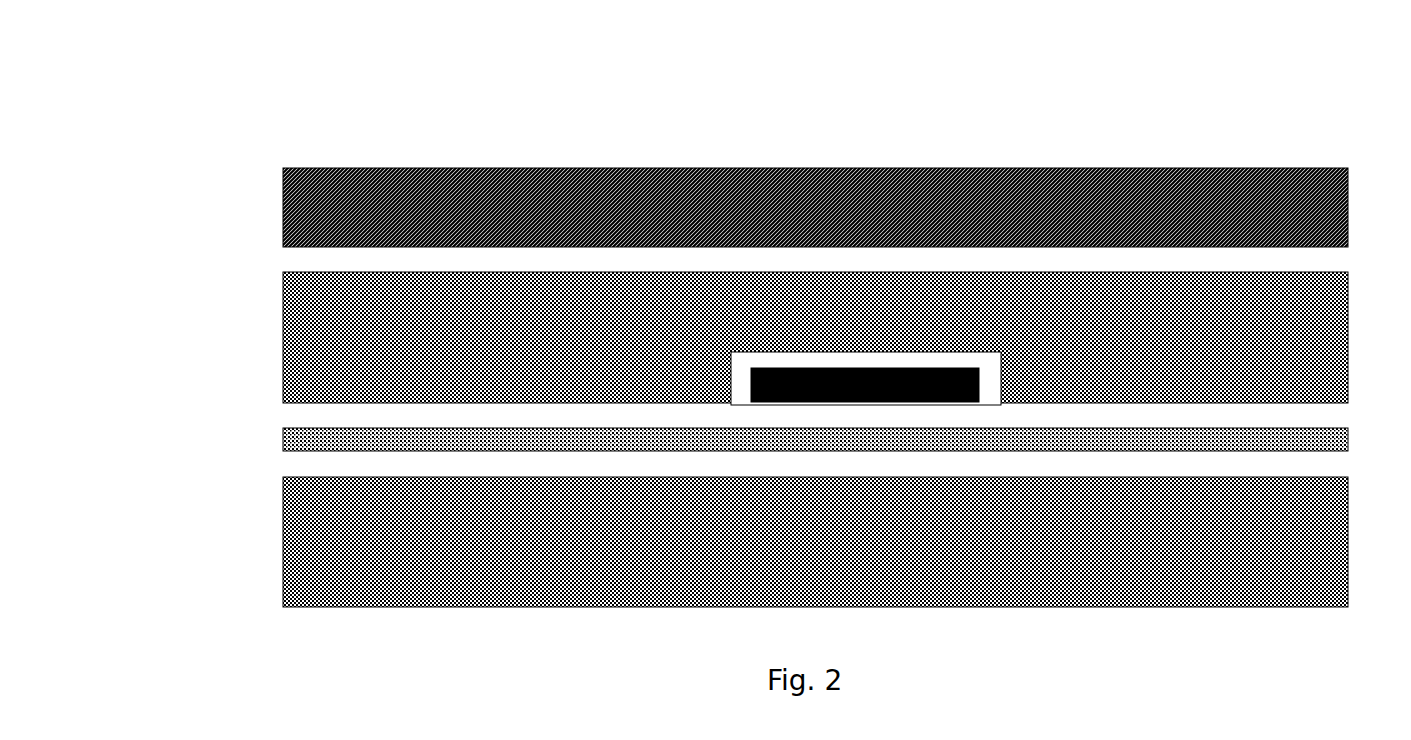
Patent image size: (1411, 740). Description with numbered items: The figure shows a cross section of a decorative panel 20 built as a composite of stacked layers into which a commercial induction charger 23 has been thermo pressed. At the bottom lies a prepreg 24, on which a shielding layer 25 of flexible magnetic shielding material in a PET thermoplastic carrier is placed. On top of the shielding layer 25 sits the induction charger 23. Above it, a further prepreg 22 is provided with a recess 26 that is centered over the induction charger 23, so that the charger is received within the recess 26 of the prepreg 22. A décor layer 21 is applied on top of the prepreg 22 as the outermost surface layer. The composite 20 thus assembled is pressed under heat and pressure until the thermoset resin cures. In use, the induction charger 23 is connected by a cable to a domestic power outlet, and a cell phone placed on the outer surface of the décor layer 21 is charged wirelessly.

The decorative panel 20 is at (752, 314).
The décor layer 21 is at (290, 198).
The prepreg 22 is at (290, 303).
The induction charger 23 is at (750, 378).
The prepreg 24 is at (290, 522).
The shielding layer 25 is at (1313, 440).
The recess 26 is at (990, 352).